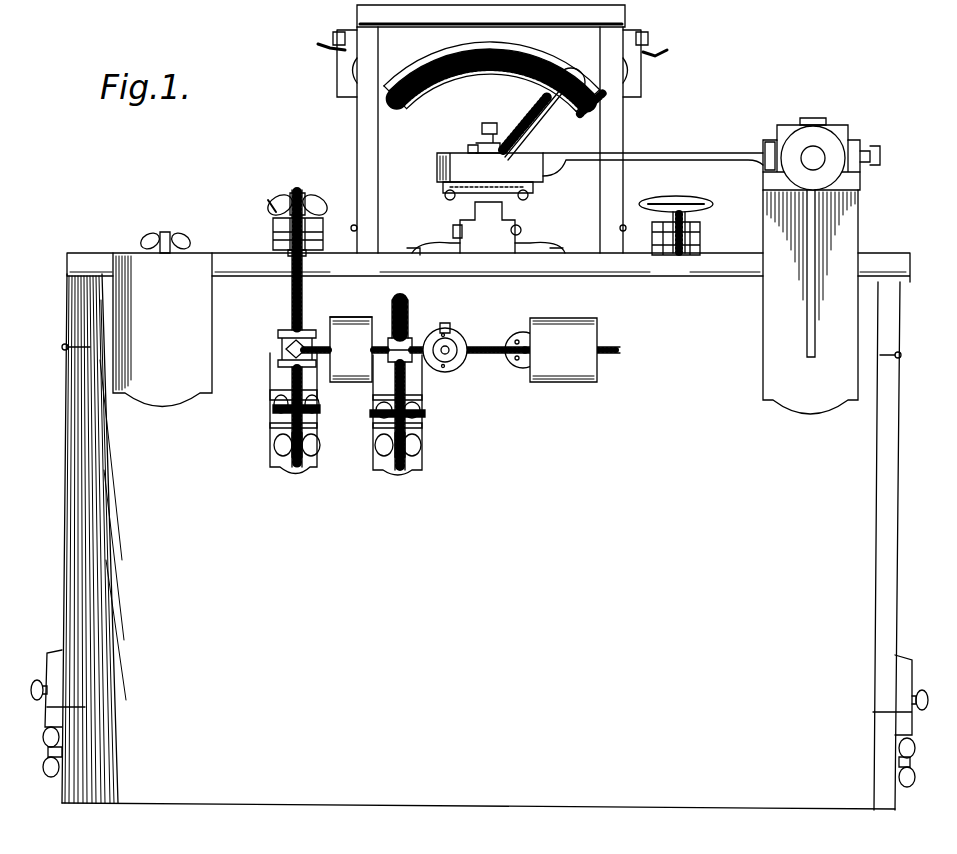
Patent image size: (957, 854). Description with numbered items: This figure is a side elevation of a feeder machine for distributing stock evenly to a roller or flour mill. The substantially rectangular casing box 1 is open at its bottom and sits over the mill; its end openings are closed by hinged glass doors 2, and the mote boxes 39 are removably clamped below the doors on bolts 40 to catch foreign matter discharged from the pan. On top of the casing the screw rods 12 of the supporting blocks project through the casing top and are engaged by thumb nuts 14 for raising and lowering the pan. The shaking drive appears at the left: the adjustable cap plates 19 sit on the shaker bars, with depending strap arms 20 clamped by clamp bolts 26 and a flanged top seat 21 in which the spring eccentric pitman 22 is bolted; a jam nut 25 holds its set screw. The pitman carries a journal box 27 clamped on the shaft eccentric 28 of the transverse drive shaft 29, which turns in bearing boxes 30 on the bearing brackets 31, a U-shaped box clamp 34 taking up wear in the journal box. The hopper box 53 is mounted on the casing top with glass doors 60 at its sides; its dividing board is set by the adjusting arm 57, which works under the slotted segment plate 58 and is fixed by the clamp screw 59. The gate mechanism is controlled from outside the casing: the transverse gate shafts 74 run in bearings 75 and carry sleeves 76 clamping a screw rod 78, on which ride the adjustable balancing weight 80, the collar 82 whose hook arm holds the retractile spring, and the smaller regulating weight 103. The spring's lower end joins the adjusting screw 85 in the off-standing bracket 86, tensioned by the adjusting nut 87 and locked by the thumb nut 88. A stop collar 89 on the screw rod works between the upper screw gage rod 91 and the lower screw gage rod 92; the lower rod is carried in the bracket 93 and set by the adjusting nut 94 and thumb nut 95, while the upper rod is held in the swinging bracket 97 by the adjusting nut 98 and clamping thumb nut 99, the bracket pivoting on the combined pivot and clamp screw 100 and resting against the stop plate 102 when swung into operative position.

The casing box 1 is at (483, 531).
The hinged glass doors 2 is at (72, 534).
The screw rods 12 is at (165, 232).
The thumb nuts 14 is at (188, 240).
The adjustable cap plates 19 is at (480, 197).
The depending strap arms 20 is at (522, 231).
The horizontal flanged top seat 21 is at (532, 184).
The spring eccentric pitmen 22 is at (677, 153).
The jam nuts 25 is at (472, 148).
The clamp bolts 26 is at (444, 196).
The journal boxes 27 is at (773, 140).
The shaft eccentrics 28 is at (496, 128).
The transverse drive shaft 29 is at (820, 158).
The bearing boxes 30 is at (765, 181).
The bearing brackets 31 is at (843, 230).
The U-shaped box clamp 34 is at (790, 124).
The mote boxes 39 is at (72, 783).
The bolts 40 is at (47, 752).
The hopper box 53 is at (383, 127).
The adjusting arm 57 is at (540, 112).
The slotted segment plate 58 is at (402, 82).
The clamp screw 59 is at (571, 67).
The glass doors 60 is at (368, 163).
The transverse gate shafts 74 is at (453, 333).
The bearings 75 is at (514, 343).
The sleeves 76 is at (452, 360).
The screw rod 78 is at (626, 350).
The adjustable balancing weight 80 is at (565, 383).
The collar 82 is at (351, 349).
The adjusting screw 85 is at (410, 467).
The off-standing bracket 86 is at (388, 468).
The adjusting nut 87 is at (420, 416).
The thumb nut 88 is at (402, 306).
The stop collars 89 is at (282, 345).
The upper screw gage rod 91 is at (292, 292).
The lower screw gage rod 92 is at (297, 470).
The off-standing bracket 93 is at (275, 458).
The adjusting nut 94 is at (288, 404).
The thumb nut 95 is at (278, 443).
The swinging brackets 97 is at (273, 236).
The adjusting nuts 98 is at (288, 254).
The clamping thumb nuts 99 is at (290, 196).
The combined pivot and clamp screws 100 is at (272, 205).
The stop plates 102 is at (356, 278).
The smaller regulating weights 103 is at (350, 318).